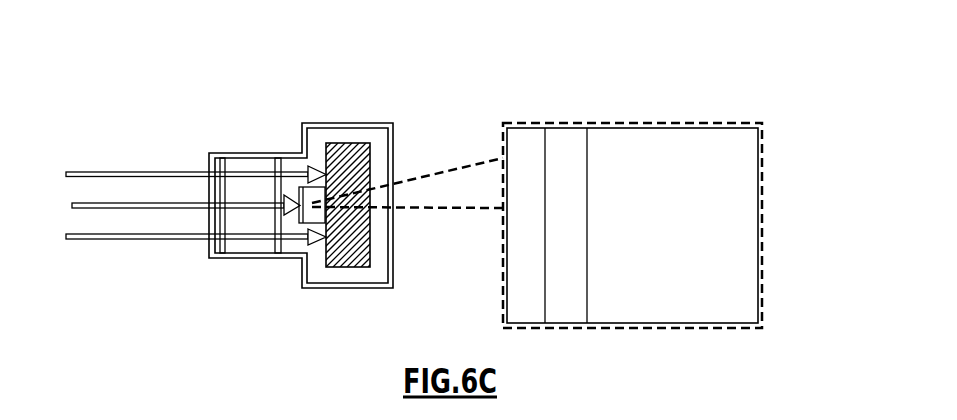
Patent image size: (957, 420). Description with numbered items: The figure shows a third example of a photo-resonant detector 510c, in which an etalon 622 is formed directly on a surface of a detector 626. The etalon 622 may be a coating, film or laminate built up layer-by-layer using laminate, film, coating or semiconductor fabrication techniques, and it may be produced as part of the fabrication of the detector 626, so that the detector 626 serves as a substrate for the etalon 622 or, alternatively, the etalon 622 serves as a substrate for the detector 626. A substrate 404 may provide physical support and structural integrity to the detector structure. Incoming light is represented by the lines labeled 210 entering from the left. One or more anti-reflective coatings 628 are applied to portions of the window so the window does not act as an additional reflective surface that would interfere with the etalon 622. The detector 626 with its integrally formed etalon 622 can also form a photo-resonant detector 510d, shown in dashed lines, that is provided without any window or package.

The optical fibers 210 is at (102, 154).
The anti-reflective coating 628 is at (267, 142).
The substrate 404 is at (348, 142).
The etalon 622 is at (297, 240).
The detector 626 is at (688, 232).
The photo-resonant detector 510c is at (396, 92).
The photo-resonant detector 510d is at (781, 198).